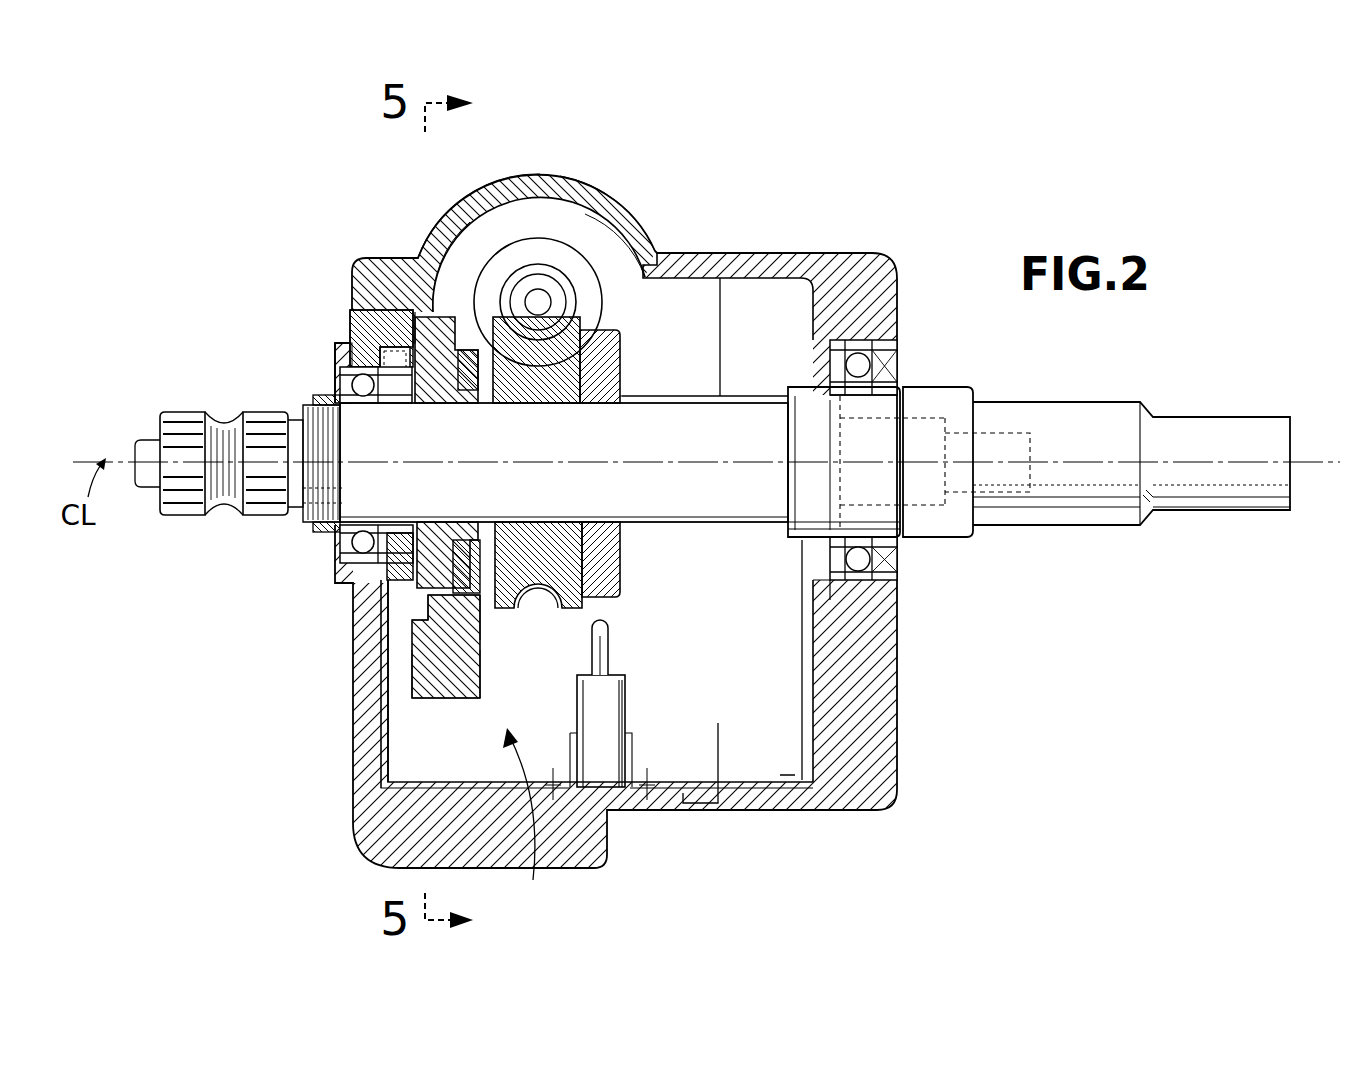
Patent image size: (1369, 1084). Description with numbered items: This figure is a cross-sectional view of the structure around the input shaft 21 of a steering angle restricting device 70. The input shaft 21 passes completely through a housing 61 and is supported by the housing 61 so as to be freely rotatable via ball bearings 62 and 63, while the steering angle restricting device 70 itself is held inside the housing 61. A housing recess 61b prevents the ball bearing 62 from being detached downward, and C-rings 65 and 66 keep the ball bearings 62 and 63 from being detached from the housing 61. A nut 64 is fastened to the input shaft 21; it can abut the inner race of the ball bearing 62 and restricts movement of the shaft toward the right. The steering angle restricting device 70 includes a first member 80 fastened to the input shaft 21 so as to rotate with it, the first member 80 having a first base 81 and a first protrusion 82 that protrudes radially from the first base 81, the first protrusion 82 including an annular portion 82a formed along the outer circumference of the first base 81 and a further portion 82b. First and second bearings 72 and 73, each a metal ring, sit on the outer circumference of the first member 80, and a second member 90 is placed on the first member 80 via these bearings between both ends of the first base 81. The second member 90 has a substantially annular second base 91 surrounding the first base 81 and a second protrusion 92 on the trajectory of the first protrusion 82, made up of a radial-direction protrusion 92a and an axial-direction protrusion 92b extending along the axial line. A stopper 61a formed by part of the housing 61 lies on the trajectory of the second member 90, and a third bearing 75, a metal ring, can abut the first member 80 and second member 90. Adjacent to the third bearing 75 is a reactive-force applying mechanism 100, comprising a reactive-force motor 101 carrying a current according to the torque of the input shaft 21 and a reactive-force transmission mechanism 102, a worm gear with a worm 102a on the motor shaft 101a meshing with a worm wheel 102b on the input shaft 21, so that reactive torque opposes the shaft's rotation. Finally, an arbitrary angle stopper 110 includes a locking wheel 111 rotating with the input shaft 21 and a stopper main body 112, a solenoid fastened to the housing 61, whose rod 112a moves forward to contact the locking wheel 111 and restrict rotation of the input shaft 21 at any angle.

The input shaft 21 is at (1066, 528).
The housing 61 is at (372, 830).
The stopper 61a is at (353, 266).
The housing recess 61b is at (343, 382).
The ball bearing 62 is at (352, 568).
The ball bearing 63 is at (858, 578).
The nut 64 is at (322, 404).
The C-ring 65 is at (395, 540).
The C-ring 66 is at (818, 588).
The steering angle restricting device 70 is at (527, 822).
The first bearing 72 is at (450, 365).
The second bearing 73 is at (470, 365).
The third bearing 75 is at (497, 604).
The first member 80 is at (295, 288).
The first base 81 is at (350, 350).
The first protrusion 82 is at (323, 285).
The annular portion 82a is at (378, 362).
The cover lip 82b is at (396, 358).
The second member 90 is at (330, 684).
The second base 91 is at (382, 582).
The second protrusion 92 is at (357, 686).
The radial-direction protrusion 92a is at (418, 612).
The axial-direction protrusion 92b is at (413, 674).
The reactive-force applying mechanism 100 is at (587, 214).
The reactive-force motor 101 is at (553, 236).
The motor shaft 101a is at (473, 224).
The reactive-force transmission mechanism 102 is at (658, 197).
The worm 102a is at (622, 212).
The worm wheel 102b is at (612, 165).
The arbitrary angle stopper 110 is at (673, 540).
The locking wheel 111 is at (622, 556).
The stopper main body 112 is at (636, 706).
The rod 112a is at (613, 661).